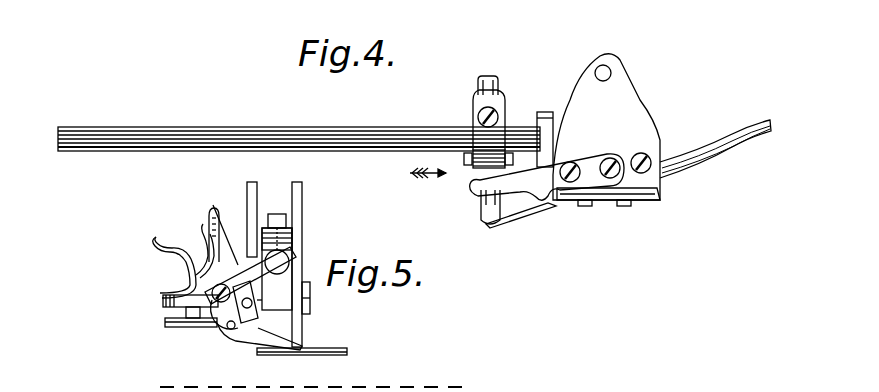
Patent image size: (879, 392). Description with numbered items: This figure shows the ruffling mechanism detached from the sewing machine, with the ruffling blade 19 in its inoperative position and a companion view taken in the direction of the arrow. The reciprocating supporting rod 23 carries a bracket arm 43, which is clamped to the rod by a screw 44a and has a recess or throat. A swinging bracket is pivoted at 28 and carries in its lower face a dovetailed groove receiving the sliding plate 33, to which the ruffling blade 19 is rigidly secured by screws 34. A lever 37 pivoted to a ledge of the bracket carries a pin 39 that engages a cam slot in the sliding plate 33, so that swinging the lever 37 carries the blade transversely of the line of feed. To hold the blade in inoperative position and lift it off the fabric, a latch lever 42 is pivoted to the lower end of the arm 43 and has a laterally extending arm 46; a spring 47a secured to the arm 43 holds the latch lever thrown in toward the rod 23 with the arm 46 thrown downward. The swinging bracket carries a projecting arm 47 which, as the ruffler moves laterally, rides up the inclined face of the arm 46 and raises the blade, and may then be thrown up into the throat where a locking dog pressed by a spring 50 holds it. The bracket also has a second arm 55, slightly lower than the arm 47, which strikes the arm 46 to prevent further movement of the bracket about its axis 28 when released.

In FIG. 4, the supporting rod 23 is at (362, 134).
In FIG. 4, the screw 44a is at (478, 117).
In FIG. 4, the latch lever 42 is at (490, 84).
In FIG. 5, the latch lever 42 is at (226, 242).
In FIG. 4, the spring 50 is at (504, 97).
In FIG. 4, the bracket arm 43 is at (484, 160).
In FIG. 5, the bracket arm 43 is at (250, 275).
In FIG. 4, the second arm 55 is at (550, 176).
In FIG. 5, the second arm 55 is at (312, 306).
In FIG. 4, the pivot 28 is at (648, 158).
In FIG. 4, the lever 37 is at (710, 150).
In FIG. 5, the lever 37 is at (190, 263).
In FIG. 4, the sliding plate 33 is at (638, 196).
In FIG. 5, the sliding plate 33 is at (173, 328).
In FIG. 4, the screws 34 is at (584, 206).
In FIG. 4, the laterally extending arm 46 is at (489, 222).
In FIG. 5, the laterally extending arm 46 is at (254, 338).
In FIG. 4, the ruffling blade 19 is at (508, 222).
In FIG. 5, the ruffling blade 19 is at (333, 352).
In FIG. 5, the spring 47a is at (200, 256).
In FIG. 5, the pin 39 is at (186, 313).
In FIG. 5, the projecting arm 47 is at (222, 326).